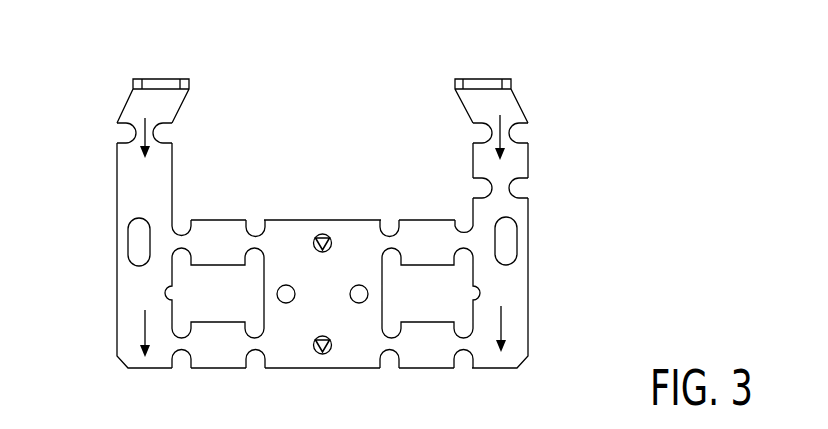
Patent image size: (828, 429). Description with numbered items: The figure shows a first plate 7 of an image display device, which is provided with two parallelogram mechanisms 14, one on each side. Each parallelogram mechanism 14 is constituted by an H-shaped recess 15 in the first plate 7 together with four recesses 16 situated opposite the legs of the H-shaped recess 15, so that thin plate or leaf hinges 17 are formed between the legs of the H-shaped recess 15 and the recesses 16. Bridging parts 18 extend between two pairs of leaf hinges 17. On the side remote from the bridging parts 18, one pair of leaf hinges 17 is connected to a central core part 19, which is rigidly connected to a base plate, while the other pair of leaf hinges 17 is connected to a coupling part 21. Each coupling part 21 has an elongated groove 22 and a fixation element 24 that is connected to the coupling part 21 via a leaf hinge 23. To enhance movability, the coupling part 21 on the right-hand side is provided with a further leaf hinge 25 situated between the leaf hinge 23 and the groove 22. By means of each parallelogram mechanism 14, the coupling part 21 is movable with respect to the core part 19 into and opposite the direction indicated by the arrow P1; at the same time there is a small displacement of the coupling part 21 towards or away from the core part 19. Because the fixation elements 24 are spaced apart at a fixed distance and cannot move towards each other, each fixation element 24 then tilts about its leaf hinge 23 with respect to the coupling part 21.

The first plate 7 is at (370, 110).
The parallelogram mechanism 14 is at (117, 187).
The H-shaped recess 15 is at (210, 307).
The recess 16 is at (254, 221).
The leaf hinge 17 is at (185, 245).
The bridging part 18 is at (213, 247).
The core part 19 is at (340, 257).
The coupling part 21 is at (138, 288).
The elongated groove 22 is at (138, 240).
The leaf hinge 23 is at (126, 130).
The fixation element 24 is at (160, 79).
The further leaf hinge 25 is at (513, 188).
The arrow P1 is at (157, 133).